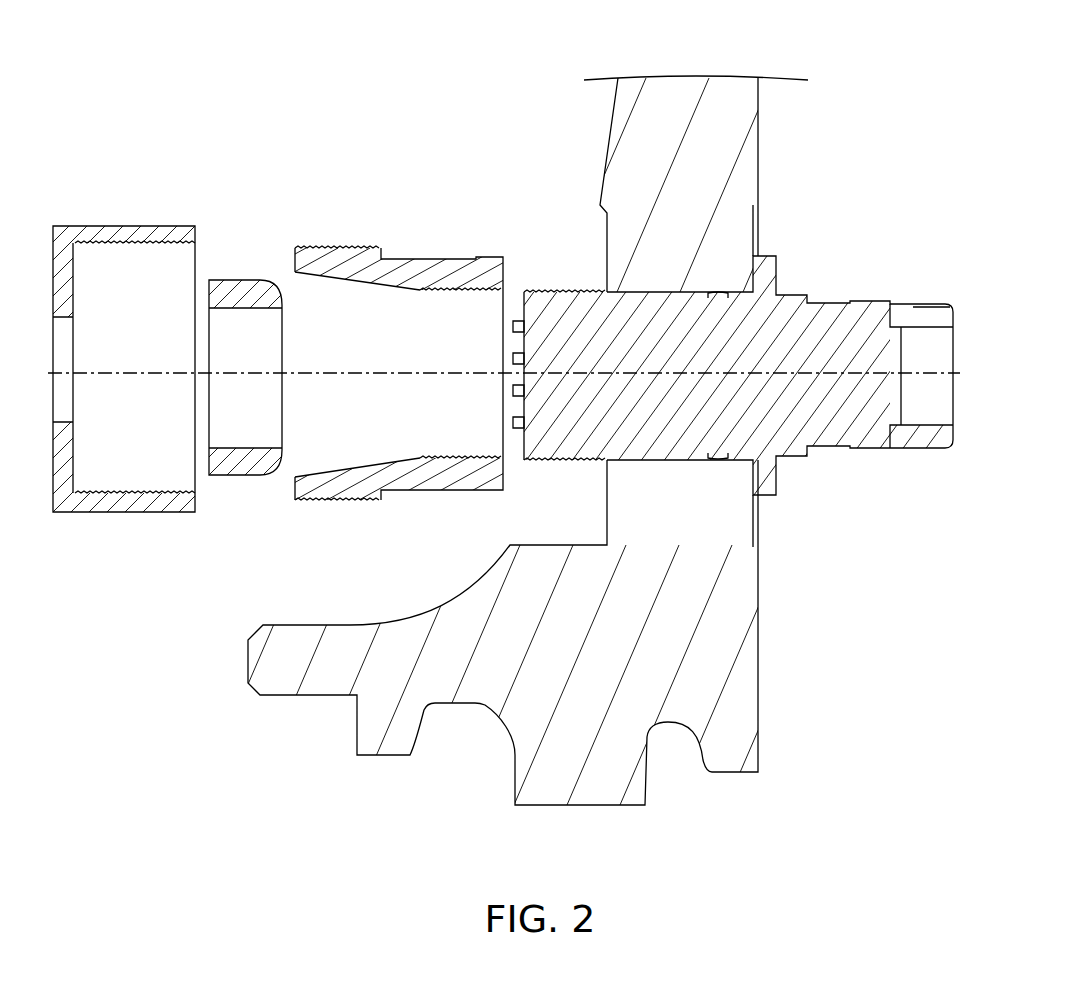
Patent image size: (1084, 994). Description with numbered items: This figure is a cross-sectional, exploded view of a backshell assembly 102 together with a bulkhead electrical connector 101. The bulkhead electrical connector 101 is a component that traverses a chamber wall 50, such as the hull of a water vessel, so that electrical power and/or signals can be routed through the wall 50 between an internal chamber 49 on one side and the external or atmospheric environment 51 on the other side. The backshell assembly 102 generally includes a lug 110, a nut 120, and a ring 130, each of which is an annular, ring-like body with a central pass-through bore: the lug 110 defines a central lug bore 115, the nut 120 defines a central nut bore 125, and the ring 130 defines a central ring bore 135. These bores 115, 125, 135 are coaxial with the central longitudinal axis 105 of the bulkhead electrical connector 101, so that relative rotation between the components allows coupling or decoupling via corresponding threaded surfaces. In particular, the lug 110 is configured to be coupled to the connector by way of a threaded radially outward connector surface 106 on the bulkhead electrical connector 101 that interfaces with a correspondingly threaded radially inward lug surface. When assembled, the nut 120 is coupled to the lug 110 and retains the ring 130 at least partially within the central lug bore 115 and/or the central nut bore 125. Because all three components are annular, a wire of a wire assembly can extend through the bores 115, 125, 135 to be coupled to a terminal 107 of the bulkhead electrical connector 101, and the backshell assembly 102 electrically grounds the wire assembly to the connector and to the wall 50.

The wall 50 is at (734, 80).
The internal chamber 49 is at (540, 157).
The external/atmospheric environment 51 is at (804, 152).
The bulkhead electrical connector 101 is at (775, 292).
The backshell assembly 102 is at (506, 182).
The central longitudinal axis 105 is at (178, 373).
The radially outward connector surface 106 is at (545, 291).
The terminal 107 is at (517, 398).
The lug 110 is at (489, 342).
The central lug bore 115 is at (383, 422).
The nut 120 is at (241, 343).
The central nut bore 125 is at (114, 422).
The ring 130 is at (243, 343).
The central ring bore 135 is at (233, 422).